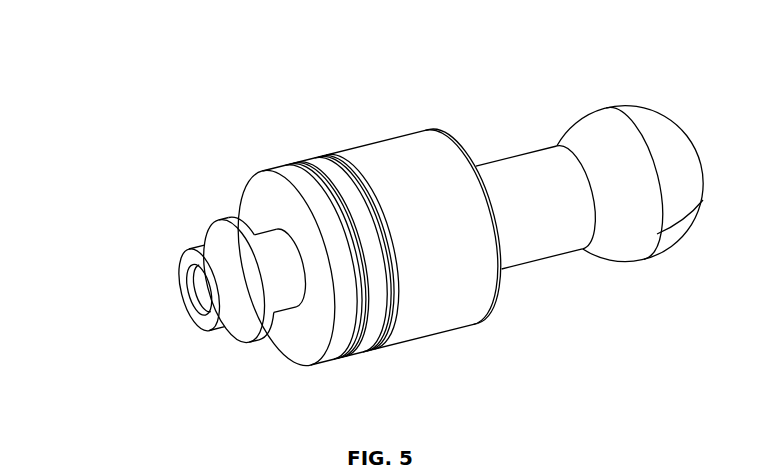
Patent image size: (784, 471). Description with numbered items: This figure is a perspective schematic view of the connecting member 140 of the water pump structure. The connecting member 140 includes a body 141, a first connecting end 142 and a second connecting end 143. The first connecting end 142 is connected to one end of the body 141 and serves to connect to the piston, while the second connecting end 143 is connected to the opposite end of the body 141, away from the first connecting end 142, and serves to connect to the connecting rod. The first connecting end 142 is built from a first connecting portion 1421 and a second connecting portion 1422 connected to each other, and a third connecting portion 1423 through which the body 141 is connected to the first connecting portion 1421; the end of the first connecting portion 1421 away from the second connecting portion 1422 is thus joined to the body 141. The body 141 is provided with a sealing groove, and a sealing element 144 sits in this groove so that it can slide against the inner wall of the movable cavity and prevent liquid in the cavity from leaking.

The connecting member 140 is at (752, 59).
The body 141 is at (410, 167).
The first connecting end 142 is at (78, 148).
The first connecting portion 1421 is at (250, 242).
The second connecting portion 1422 is at (204, 258).
The third connecting portion 1423 is at (240, 208).
The second connecting end 143 is at (633, 238).
The sealing element 144 is at (372, 330).